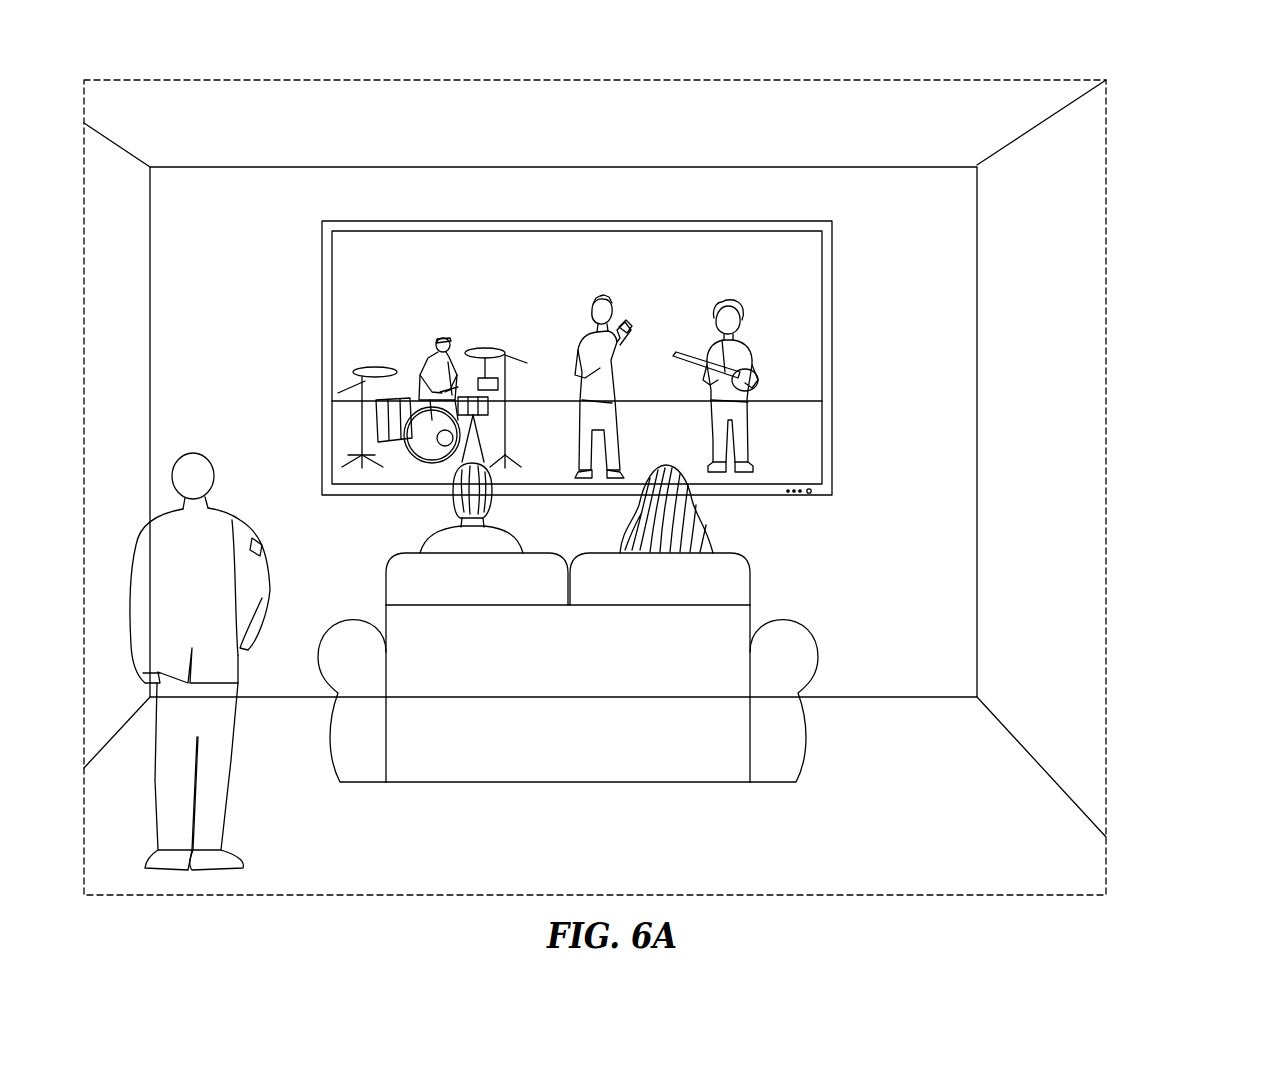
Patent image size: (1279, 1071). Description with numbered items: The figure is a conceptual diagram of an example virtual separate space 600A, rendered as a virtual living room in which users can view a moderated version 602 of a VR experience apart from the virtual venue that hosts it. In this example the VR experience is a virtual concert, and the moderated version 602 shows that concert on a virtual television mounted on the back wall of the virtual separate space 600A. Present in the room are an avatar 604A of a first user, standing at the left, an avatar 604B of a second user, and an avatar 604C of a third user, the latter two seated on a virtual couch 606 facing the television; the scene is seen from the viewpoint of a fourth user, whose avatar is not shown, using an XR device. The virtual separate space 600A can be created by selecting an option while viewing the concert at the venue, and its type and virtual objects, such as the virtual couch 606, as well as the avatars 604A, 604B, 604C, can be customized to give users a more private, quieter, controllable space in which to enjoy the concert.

The virtual separate space 600A is at (1157, 108).
The moderated version 602 is at (825, 327).
The avatar 604A is at (230, 780).
The avatar 604B is at (428, 543).
The avatar 604C is at (698, 513).
The virtual couch 606 is at (805, 717).